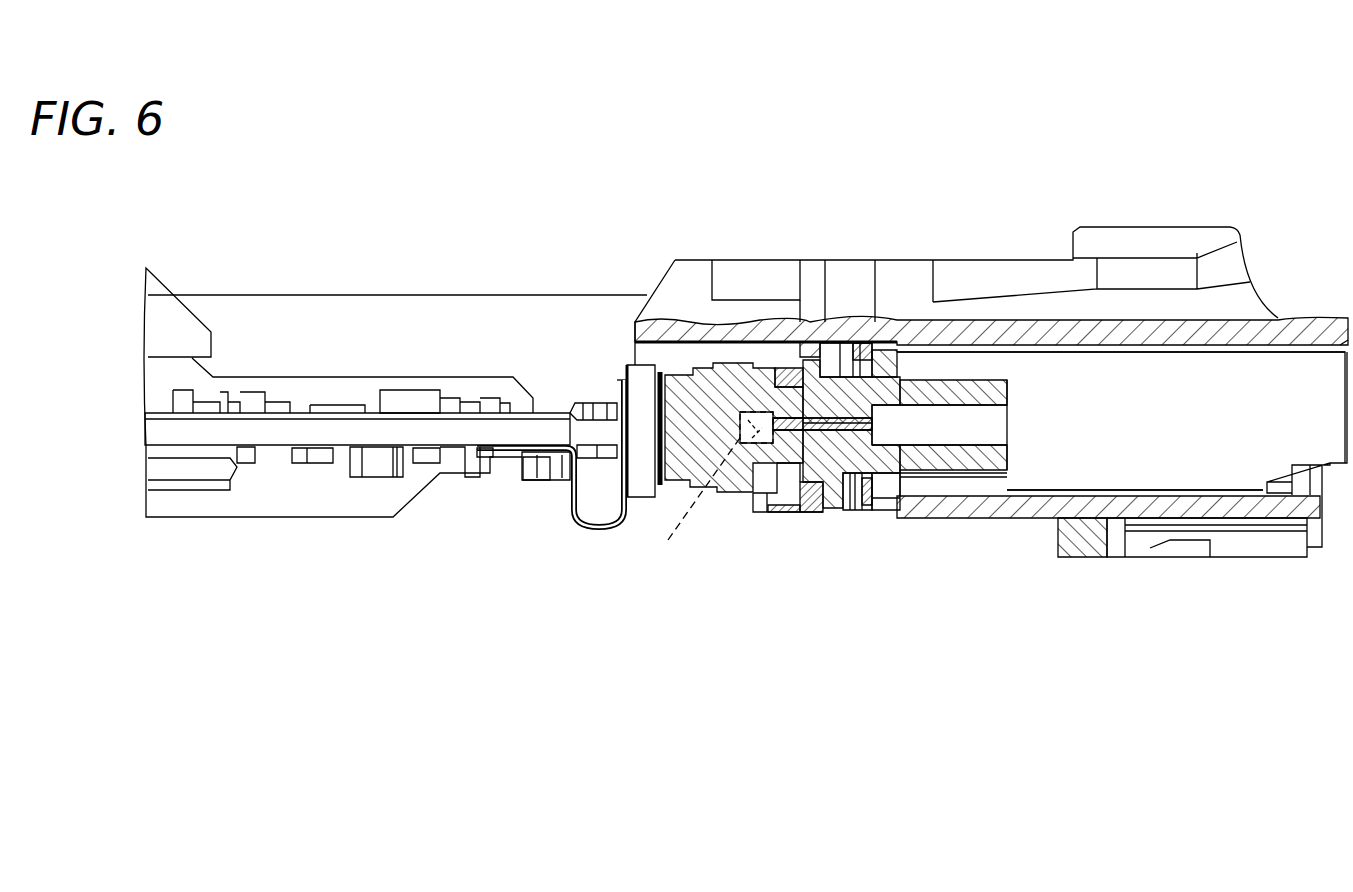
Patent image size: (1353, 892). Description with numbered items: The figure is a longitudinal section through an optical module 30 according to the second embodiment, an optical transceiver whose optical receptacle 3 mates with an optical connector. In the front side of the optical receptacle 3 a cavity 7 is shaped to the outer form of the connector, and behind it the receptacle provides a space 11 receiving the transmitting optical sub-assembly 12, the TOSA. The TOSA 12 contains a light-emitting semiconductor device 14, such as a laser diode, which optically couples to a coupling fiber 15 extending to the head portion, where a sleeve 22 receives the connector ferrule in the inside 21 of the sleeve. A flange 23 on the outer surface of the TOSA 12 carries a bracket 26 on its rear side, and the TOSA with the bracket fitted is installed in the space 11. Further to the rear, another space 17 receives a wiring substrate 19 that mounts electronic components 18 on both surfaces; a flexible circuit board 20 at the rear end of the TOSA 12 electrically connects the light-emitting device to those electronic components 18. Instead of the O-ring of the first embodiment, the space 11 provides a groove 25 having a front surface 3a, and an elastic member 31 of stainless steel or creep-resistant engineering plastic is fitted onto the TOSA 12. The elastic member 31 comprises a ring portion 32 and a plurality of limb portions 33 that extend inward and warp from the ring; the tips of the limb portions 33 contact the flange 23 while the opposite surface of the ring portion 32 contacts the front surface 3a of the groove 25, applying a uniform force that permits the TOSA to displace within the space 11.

The optical receptacle 3 is at (987, 273).
The front surface 3a is at (847, 343).
The cavity 7 is at (1263, 388).
The space 11 is at (740, 352).
The transmitting optical sub-assembly 12 is at (733, 497).
The light-emitting semiconductor device 14 is at (708, 497).
The coupling fiber 15 is at (712, 342).
The space 17 is at (438, 347).
The electronic components 18 is at (408, 402).
The wiring substrate 19 is at (283, 427).
The flexible circuit board 20 is at (590, 527).
The inside of the sleeve 21 is at (997, 427).
The sleeve 22 is at (963, 452).
The flange 23 is at (830, 512).
The groove 25 is at (820, 343).
The bracket 26 is at (807, 512).
The optical module 30 is at (576, 145).
The elastic member 31 is at (883, 350).
The ring portion 32 is at (865, 513).
The limb portions 33 is at (852, 512).